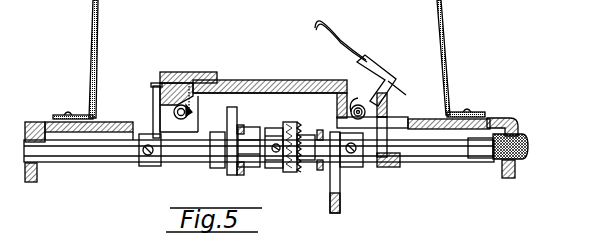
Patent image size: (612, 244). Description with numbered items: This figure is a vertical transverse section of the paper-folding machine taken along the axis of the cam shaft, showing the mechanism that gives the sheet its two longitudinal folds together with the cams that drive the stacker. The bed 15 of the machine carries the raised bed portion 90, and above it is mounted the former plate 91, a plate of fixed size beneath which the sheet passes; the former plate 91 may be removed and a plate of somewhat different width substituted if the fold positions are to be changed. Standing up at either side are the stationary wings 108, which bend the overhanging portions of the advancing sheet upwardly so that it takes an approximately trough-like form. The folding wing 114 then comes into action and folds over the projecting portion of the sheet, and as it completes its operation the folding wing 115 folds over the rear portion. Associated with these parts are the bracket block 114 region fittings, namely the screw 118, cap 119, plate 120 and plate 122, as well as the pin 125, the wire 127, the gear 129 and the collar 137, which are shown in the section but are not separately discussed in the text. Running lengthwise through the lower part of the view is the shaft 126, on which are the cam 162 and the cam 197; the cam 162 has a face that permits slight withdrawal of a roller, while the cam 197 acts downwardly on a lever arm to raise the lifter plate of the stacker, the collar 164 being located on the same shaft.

The frame bed 15 is at (499, 118).
The raised bed portion 90 is at (301, 80).
The former plate 91 is at (254, 80).
The stationary wings 108 is at (90, 43).
The folding wing 114 is at (178, 72).
The folding wing 115 is at (391, 82).
The screw 118 is at (193, 110).
The cap 119 is at (156, 81).
The plate 120 is at (206, 64).
The plate 122 is at (156, 102).
The pin 125 is at (389, 112).
The shaft 126 is at (108, 157).
The wire 127 is at (324, 30).
The gear 129 is at (280, 173).
The collar 137 is at (319, 130).
The cam 162 is at (236, 109).
The collar 164 is at (283, 129).
The cam 197 is at (338, 185).